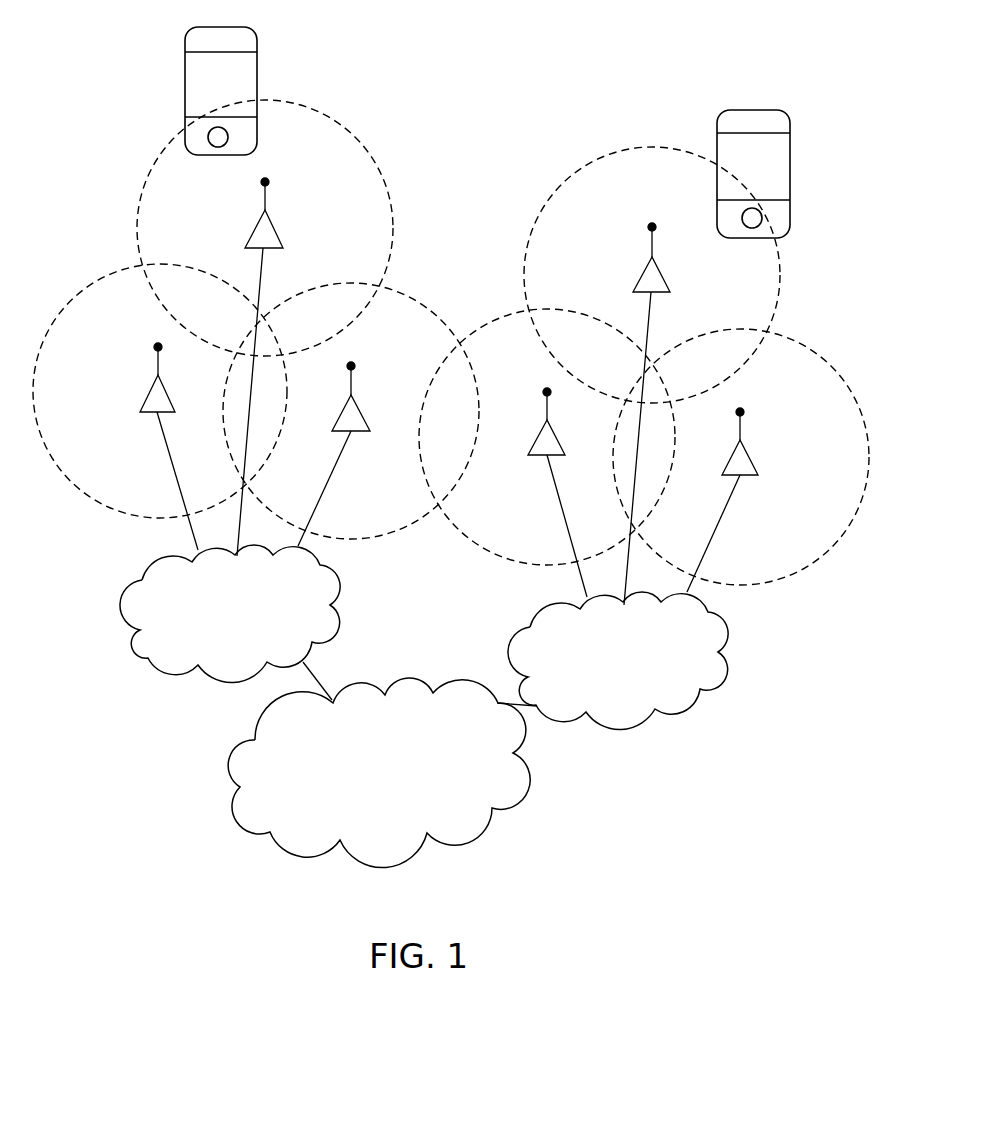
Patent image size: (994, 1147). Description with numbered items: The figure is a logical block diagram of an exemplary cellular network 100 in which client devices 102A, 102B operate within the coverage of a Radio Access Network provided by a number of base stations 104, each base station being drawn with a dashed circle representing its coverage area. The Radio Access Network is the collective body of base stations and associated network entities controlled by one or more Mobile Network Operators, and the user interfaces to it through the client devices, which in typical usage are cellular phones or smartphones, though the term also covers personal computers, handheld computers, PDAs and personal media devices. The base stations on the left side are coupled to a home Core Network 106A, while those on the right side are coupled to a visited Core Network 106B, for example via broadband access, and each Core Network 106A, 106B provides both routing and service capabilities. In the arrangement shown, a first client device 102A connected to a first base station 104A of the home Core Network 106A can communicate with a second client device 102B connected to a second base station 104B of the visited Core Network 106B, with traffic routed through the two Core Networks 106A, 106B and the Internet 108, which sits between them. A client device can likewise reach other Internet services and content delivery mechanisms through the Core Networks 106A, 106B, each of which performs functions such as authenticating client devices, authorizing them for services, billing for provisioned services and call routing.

The cellular network 100 is at (692, 807).
The first client device 102A is at (257, 98).
The second client device 102B is at (790, 182).
The base stations 104 is at (165, 385).
The first base station 104A is at (272, 223).
The second base station 104B is at (663, 268).
The home Core Network 106A is at (343, 615).
The visited Core Network 106B is at (732, 657).
The Internet 108 is at (492, 815).